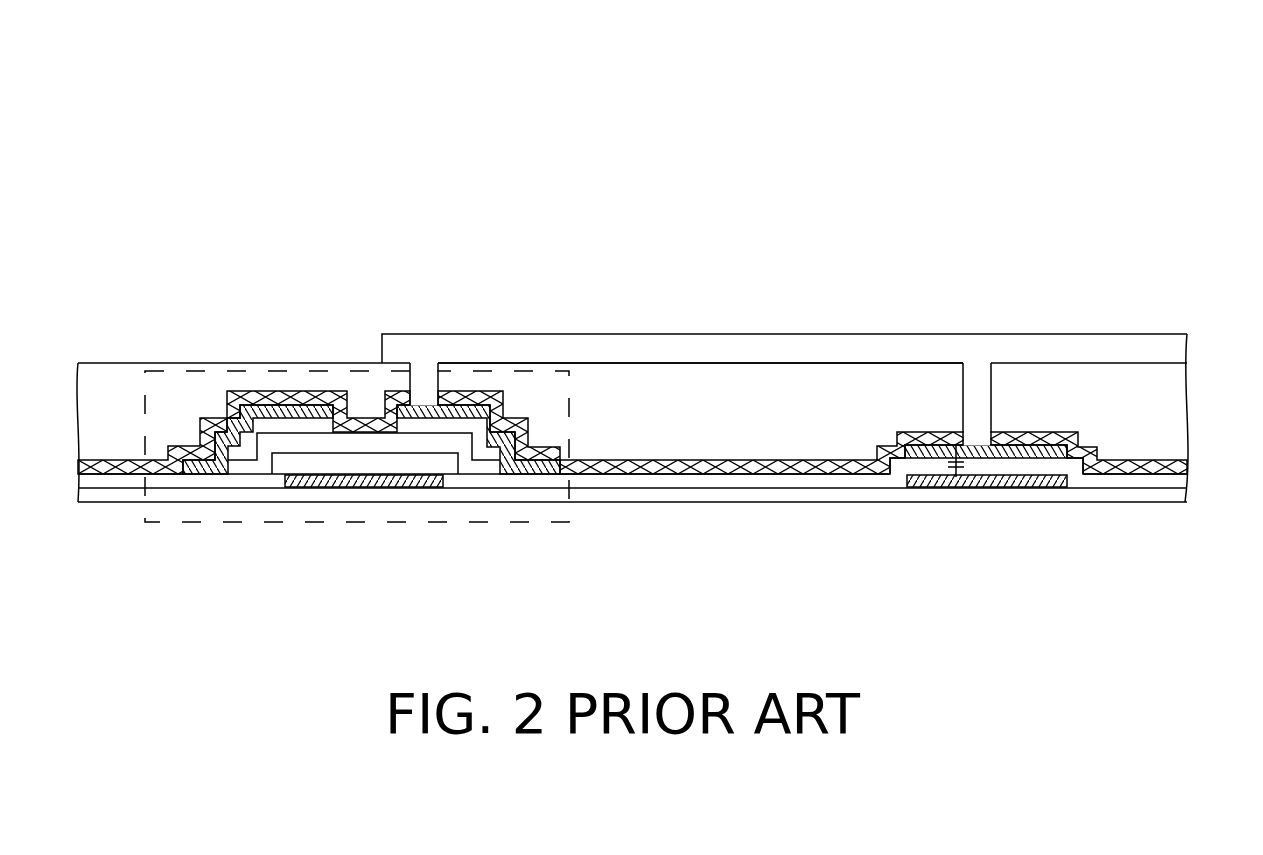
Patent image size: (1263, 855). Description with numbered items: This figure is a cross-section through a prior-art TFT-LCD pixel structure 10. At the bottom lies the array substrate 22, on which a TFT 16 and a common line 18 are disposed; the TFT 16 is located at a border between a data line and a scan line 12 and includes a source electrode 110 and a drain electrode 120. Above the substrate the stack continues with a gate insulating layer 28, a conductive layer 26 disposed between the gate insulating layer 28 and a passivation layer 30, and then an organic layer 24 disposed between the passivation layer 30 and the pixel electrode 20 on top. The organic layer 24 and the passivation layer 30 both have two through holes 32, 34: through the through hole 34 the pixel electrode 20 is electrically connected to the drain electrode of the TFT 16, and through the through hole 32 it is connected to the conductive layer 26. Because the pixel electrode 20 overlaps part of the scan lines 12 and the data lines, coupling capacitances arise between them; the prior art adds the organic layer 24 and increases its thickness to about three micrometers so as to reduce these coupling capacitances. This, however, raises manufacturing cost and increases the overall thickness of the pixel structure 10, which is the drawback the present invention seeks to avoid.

The pixel structure 10 is at (1102, 145).
The scan line 12 is at (345, 483).
The TFT 16 is at (232, 524).
The common line 18 is at (930, 478).
The pixel electrode 20 is at (752, 348).
The array substrate 22 is at (642, 493).
The organic layer 24 is at (800, 428).
The conductive layer 26 is at (1028, 450).
The gate insulating layer 28 is at (1073, 480).
The passivation layer 30 is at (1165, 462).
The through hole 32 is at (978, 435).
The through hole 34 is at (424, 374).
The source electrode 110 is at (463, 402).
The drain electrode 120 is at (285, 395).